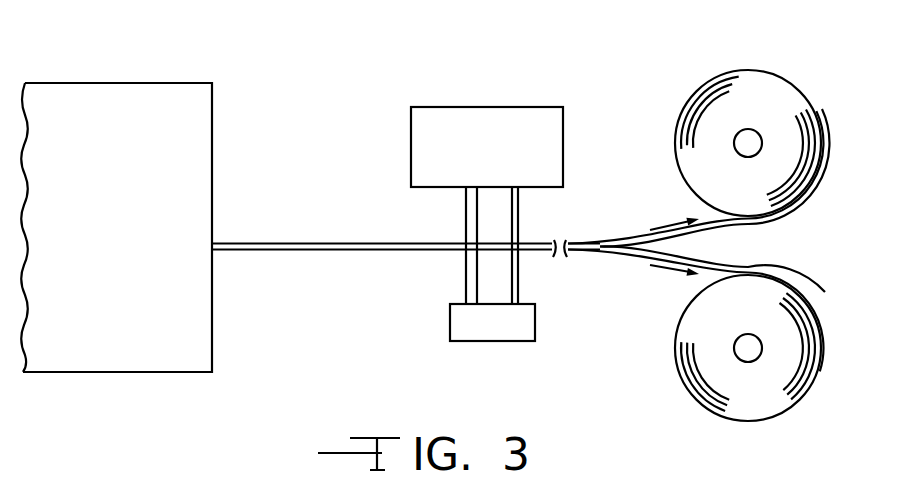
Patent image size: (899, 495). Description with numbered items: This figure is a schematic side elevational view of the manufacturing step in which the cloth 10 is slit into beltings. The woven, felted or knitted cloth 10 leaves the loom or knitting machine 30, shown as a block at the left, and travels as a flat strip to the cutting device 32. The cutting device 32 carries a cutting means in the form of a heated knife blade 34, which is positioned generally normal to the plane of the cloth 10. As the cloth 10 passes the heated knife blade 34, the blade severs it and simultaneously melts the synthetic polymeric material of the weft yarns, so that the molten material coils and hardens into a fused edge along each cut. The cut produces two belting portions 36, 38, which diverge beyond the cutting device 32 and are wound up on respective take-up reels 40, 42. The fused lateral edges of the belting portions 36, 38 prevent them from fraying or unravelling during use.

The cloth 10 is at (272, 240).
The loom or knitting machine 30 is at (192, 112).
The cutting device 32 is at (515, 98).
The heated knife blade 34 is at (463, 279).
The belting portion 36 is at (745, 226).
The belting portion 38 is at (742, 264).
The take-up reel 40 is at (749, 130).
The take-up reel 42 is at (743, 354).